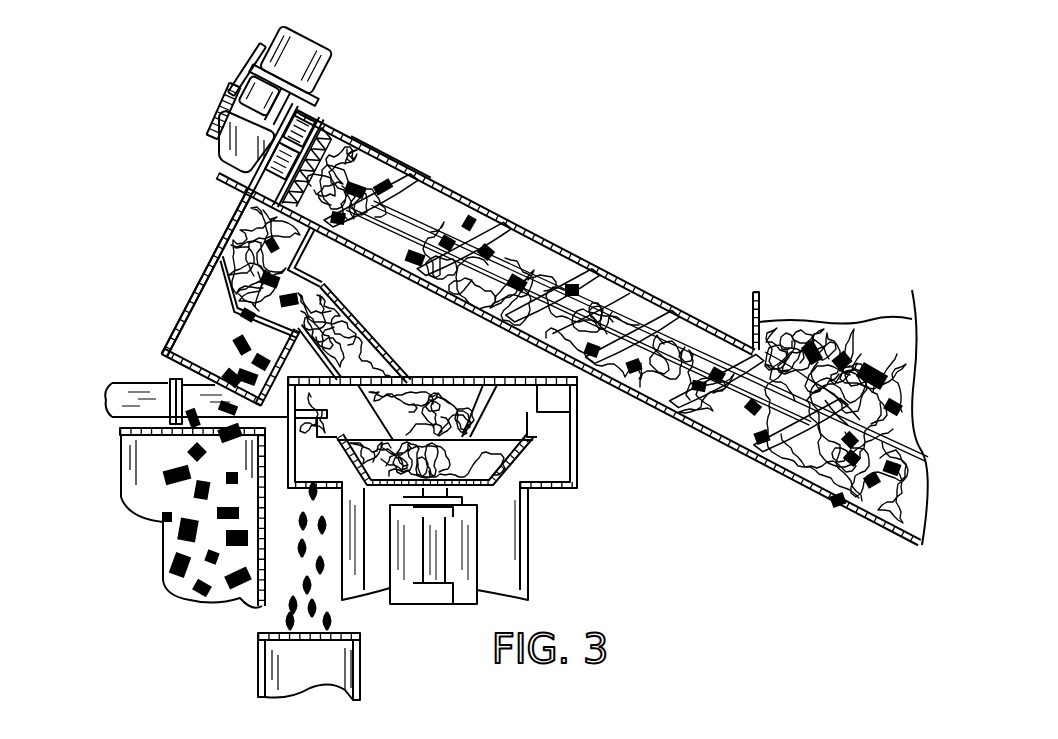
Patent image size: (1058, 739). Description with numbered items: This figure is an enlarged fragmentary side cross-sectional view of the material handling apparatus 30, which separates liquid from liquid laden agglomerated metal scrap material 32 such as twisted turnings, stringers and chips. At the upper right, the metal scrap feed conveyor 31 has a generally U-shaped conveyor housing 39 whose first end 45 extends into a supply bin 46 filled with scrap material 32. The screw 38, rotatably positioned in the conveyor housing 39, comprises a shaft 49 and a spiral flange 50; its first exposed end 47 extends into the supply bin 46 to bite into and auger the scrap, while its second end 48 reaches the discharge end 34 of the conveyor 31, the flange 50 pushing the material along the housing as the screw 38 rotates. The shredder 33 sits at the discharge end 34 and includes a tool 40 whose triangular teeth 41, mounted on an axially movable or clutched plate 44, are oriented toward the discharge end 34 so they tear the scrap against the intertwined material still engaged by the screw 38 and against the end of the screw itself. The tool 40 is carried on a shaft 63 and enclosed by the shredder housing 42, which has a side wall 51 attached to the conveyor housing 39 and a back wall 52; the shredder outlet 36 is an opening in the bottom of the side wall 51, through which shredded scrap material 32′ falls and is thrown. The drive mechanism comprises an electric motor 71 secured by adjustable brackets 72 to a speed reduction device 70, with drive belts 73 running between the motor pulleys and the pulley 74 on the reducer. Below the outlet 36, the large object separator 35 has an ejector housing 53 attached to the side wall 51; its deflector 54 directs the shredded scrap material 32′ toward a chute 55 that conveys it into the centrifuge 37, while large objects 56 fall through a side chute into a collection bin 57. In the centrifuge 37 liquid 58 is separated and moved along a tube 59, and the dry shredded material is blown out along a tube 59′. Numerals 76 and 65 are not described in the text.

The material handling apparatus 30 is at (541, 112).
The metal scrap feed conveyor 31 is at (565, 250).
The agglomerated metal scrap material 32 is at (813, 323).
The shredded scrap material 32′ is at (375, 357).
The shredder 33 is at (358, 139).
The discharge end 34 is at (378, 140).
The large object separator 35 is at (212, 239).
The shredder outlet 36 is at (246, 212).
The centrifuge 37 is at (582, 472).
The screw 38 is at (613, 303).
The conveyor housing 39 is at (476, 235).
The tool 40 is at (273, 184).
The teeth 41 is at (334, 140).
The plate 44 is at (298, 128).
The first end 45 is at (797, 467).
The supply bin 46 is at (754, 292).
The first exposed end 47 is at (843, 417).
The second end 48 is at (371, 228).
The shaft 49 is at (532, 240).
The flange 50 is at (611, 307).
The ejector housing 53 is at (234, 284).
The deflector 54 is at (232, 302).
The chute 55 is at (366, 330).
The large objects 56 is at (242, 344).
The collection bin 57 is at (188, 600).
The liquid 58 is at (318, 600).
The tube 59 is at (258, 668).
The tube 59′ is at (112, 392).
The speed reduction device 70 is at (218, 153).
The electric motor 71 is at (290, 30).
The brackets 72 is at (255, 77).
The drive belts 73 is at (248, 72).
The pulley 74 is at (214, 118).
The shaft 63 is at (384, 738).
The back wall 52 is at (433, 738).
The element of adjacent figure 76 is at (488, 738).
The shredder housing 42 is at (542, 738).
The side wall 51 is at (618, 738).
The element of adjacent figure 65 is at (660, 738).